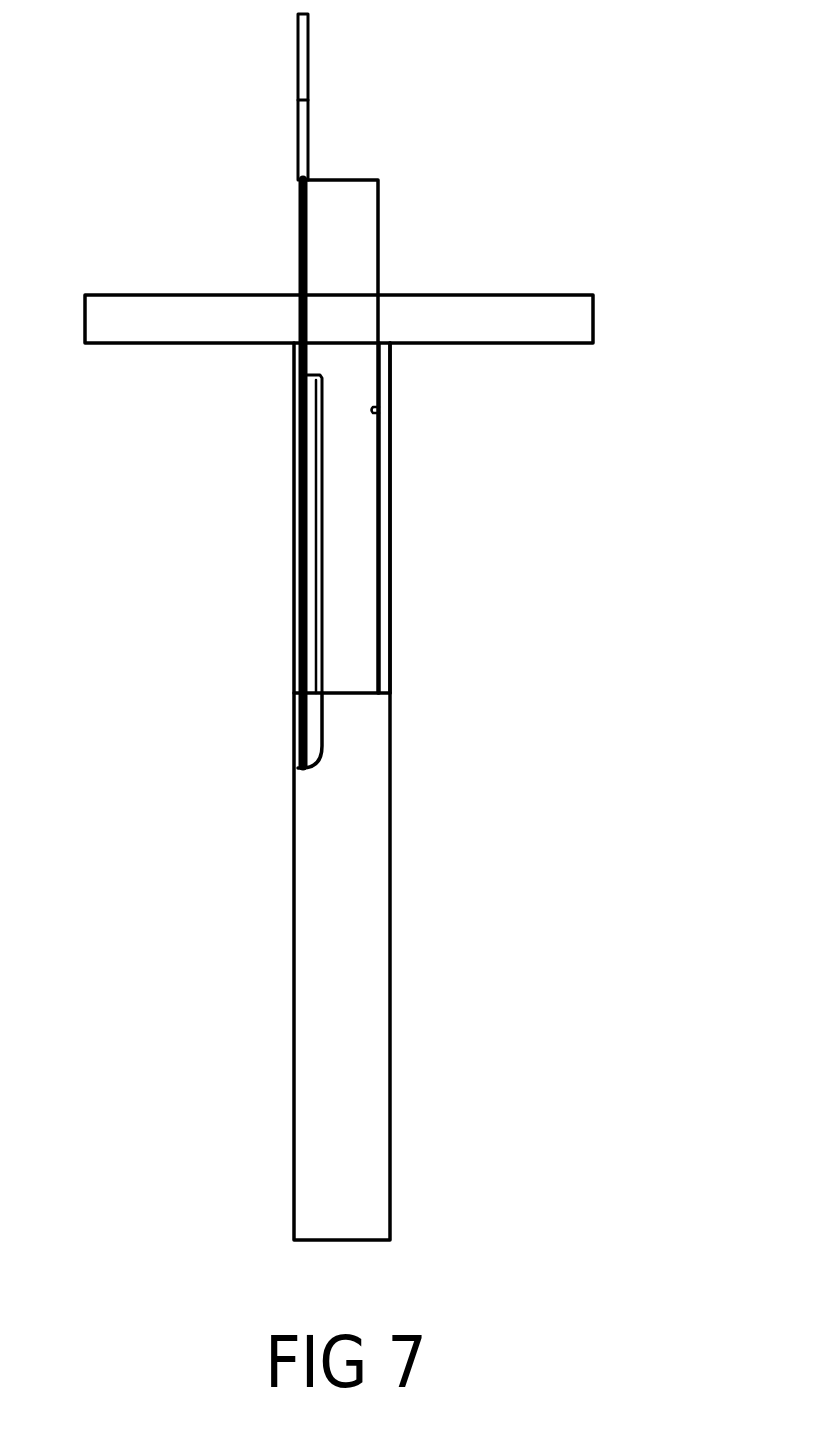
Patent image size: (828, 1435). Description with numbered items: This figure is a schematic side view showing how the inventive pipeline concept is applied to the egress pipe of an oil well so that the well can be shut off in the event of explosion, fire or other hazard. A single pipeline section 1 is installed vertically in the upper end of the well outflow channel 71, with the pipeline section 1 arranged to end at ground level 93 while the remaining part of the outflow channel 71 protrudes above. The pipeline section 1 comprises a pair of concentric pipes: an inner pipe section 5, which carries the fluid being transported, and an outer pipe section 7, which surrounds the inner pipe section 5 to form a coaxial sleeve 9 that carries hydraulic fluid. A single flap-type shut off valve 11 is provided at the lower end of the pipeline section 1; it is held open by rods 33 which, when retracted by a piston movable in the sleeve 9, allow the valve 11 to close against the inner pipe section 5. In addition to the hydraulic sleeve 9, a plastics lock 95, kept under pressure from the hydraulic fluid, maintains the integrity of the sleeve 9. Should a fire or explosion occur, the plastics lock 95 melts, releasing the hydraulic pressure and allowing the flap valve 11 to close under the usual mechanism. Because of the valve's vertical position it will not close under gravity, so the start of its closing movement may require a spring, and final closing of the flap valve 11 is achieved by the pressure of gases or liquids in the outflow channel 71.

The pipeline section 1 is at (380, 235).
The inner pipe section 5 is at (380, 408).
The outer pipe section 7 is at (390, 500).
The sleeve 9 is at (386, 620).
The shut off valve 11 is at (297, 730).
The rods 33 is at (320, 717).
The well outflow channel 71 is at (393, 903).
The ground level 93 is at (487, 320).
The plastics lock 95 is at (297, 112).